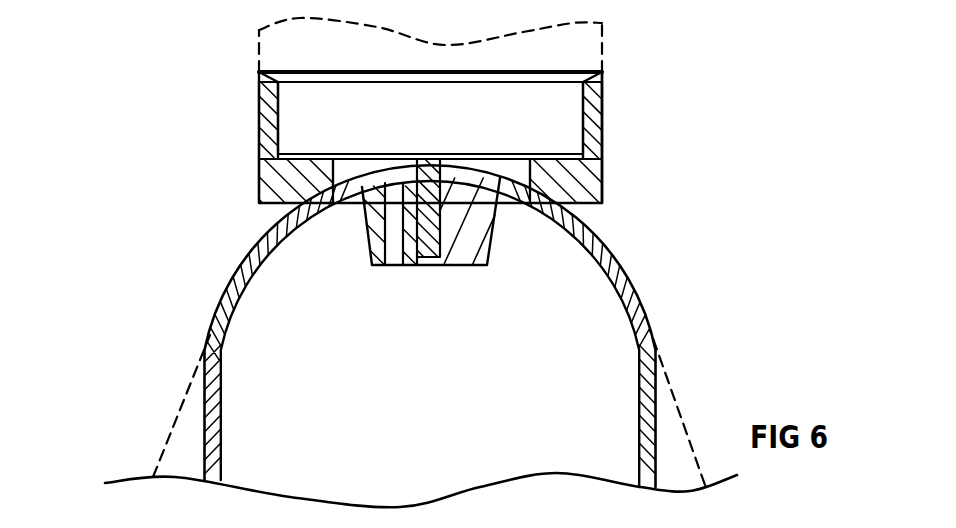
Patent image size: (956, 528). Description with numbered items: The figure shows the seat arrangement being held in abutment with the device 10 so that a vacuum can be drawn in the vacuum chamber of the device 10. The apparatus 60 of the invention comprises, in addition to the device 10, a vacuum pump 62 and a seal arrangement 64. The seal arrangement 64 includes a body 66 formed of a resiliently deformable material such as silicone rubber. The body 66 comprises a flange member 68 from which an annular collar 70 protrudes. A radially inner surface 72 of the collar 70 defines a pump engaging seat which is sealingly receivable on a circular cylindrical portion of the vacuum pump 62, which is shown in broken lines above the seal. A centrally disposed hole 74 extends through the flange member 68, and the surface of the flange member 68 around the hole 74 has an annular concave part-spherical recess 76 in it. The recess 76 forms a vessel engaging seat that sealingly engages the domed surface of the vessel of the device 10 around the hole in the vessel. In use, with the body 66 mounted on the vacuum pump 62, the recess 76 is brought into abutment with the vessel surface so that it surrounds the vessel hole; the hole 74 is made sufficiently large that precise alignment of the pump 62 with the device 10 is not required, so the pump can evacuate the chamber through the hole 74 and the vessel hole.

The device 10 is at (158, 300).
The apparatus 60 is at (178, 148).
The vacuum pump 62 is at (583, 43).
The seal arrangement 64 is at (250, 133).
The body 66 is at (615, 120).
The flange member 68 is at (570, 198).
The annular collar 70 is at (605, 138).
The radially inner surface 72 is at (282, 118).
The hole 74 is at (405, 163).
The recess 76 is at (540, 198).